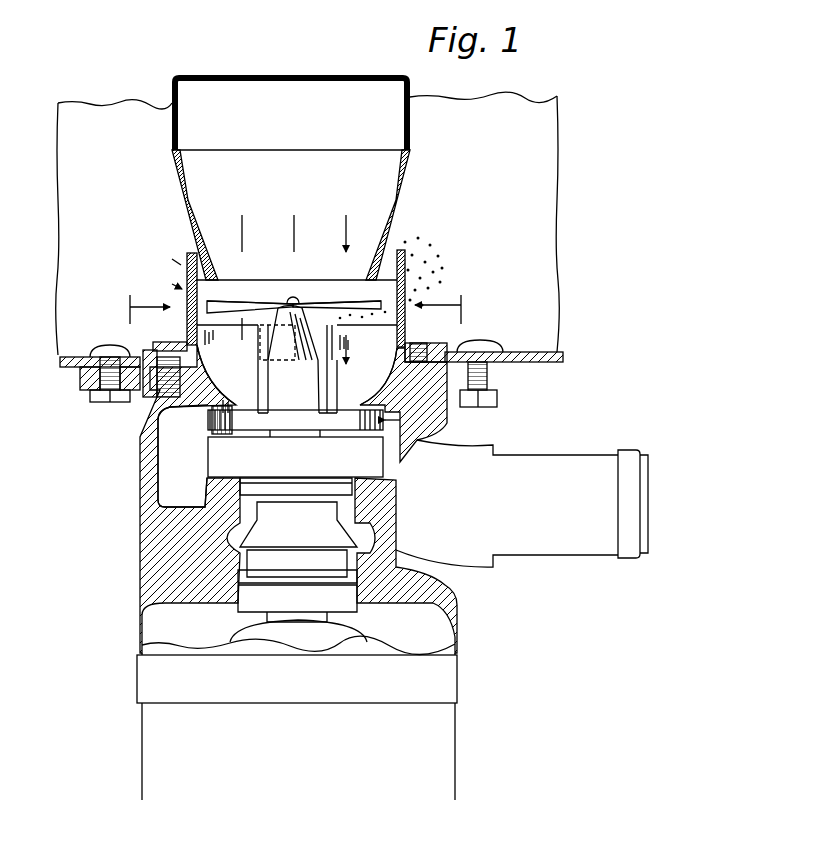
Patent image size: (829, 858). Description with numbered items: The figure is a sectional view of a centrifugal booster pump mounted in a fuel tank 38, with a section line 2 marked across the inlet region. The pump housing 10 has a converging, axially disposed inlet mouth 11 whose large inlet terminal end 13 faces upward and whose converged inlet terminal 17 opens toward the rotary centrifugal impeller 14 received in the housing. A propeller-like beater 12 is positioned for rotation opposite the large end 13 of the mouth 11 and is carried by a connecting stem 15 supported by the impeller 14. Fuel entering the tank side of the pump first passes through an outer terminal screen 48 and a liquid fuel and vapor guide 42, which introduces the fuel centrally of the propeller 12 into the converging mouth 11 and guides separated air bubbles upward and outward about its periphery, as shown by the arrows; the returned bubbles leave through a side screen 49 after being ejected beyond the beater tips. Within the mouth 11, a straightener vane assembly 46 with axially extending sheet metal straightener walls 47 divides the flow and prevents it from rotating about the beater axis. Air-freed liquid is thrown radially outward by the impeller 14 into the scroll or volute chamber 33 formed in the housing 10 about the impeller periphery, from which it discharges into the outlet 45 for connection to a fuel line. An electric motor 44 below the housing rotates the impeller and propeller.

The centrifugal booster pump housing 10 is at (138, 525).
The converging inlet mouth 11 is at (198, 338).
The propeller-like beater 12 is at (345, 303).
The large inlet terminal end 13 is at (383, 303).
The rotary centrifugal impeller 14 is at (420, 423).
The connecting stem 15 is at (280, 369).
The converged inlet terminal 17 is at (230, 417).
The section line 2 is at (293, 309).
The scroll or volute chamber 33 is at (173, 477).
The fuel tank 38 is at (557, 216).
The liquid fuel and vapor guide 42 is at (178, 174).
The electric motor 44 is at (443, 722).
The outlet 45 is at (648, 470).
The straightener vane assembly 46 is at (254, 324).
The straightener walls 47 is at (370, 333).
The outer terminal screen 48 is at (266, 76).
The side screen 49 is at (186, 273).